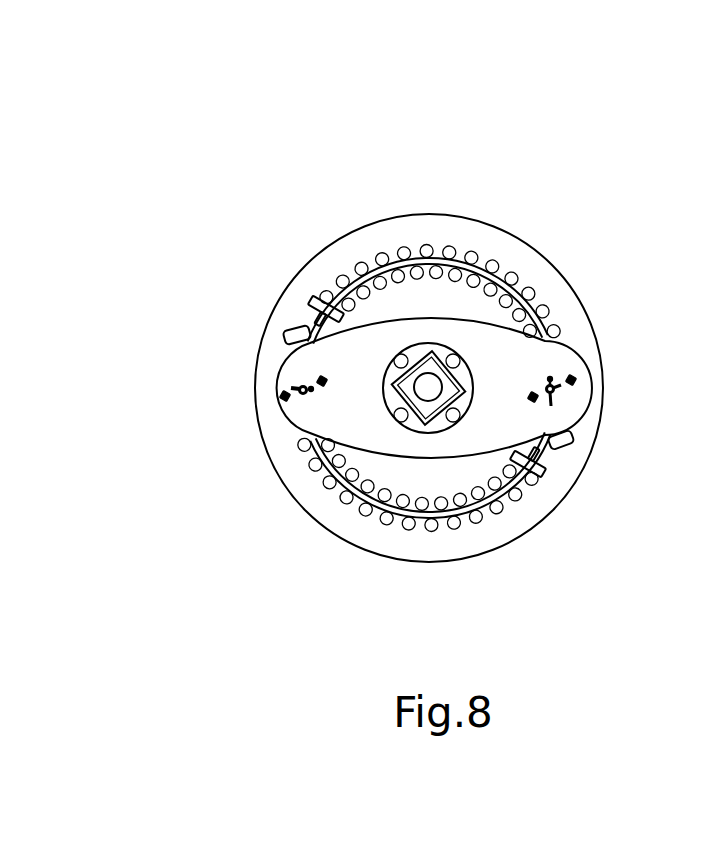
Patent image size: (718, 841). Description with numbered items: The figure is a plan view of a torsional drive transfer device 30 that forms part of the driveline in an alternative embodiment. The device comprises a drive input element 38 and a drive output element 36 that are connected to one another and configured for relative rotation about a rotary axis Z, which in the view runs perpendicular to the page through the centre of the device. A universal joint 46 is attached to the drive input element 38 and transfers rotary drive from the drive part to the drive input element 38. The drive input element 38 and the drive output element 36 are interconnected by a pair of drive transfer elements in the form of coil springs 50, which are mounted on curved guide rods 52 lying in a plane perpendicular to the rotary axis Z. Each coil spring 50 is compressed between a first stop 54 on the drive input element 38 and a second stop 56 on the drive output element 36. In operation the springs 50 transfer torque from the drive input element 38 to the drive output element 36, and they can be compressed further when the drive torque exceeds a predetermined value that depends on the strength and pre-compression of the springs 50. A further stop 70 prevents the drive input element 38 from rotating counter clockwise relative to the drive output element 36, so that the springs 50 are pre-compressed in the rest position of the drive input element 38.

The torsional drive transfer device 30 is at (545, 176).
The drive output element 36 is at (530, 265).
The drive input element 38 is at (565, 393).
The universal joint 46 is at (400, 375).
The coil springs 50 is at (375, 262).
The curved guide rods 52 is at (406, 250).
The first stop 54 is at (300, 400).
The second stop 56 is at (316, 304).
The stop 70 is at (290, 333).
The rotary axis Z is at (428, 387).